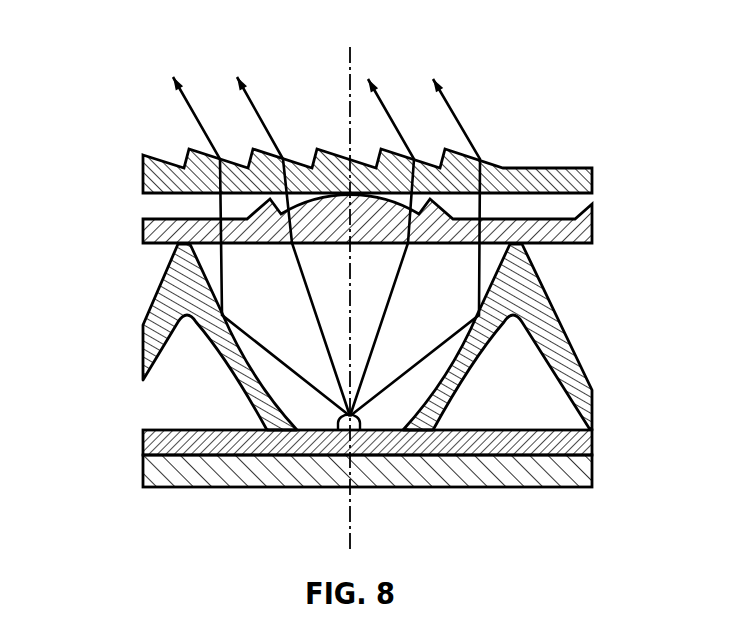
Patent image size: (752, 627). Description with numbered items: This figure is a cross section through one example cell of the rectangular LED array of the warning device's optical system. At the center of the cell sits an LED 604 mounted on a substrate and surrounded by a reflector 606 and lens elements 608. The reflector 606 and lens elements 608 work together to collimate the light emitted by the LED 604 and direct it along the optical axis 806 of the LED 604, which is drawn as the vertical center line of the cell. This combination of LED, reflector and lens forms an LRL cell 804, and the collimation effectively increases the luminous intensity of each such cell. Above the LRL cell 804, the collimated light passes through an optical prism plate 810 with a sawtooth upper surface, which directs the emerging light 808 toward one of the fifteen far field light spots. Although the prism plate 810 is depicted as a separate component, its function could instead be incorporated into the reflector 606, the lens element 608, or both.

The LRL cell 804 is at (127, 193).
The optical axis 806 is at (350, 500).
The light 808 is at (195, 108).
The optical prism plate 810 is at (487, 158).
The LED 604 is at (362, 417).
The reflector 606 is at (222, 315).
The lens element 608 is at (537, 218).